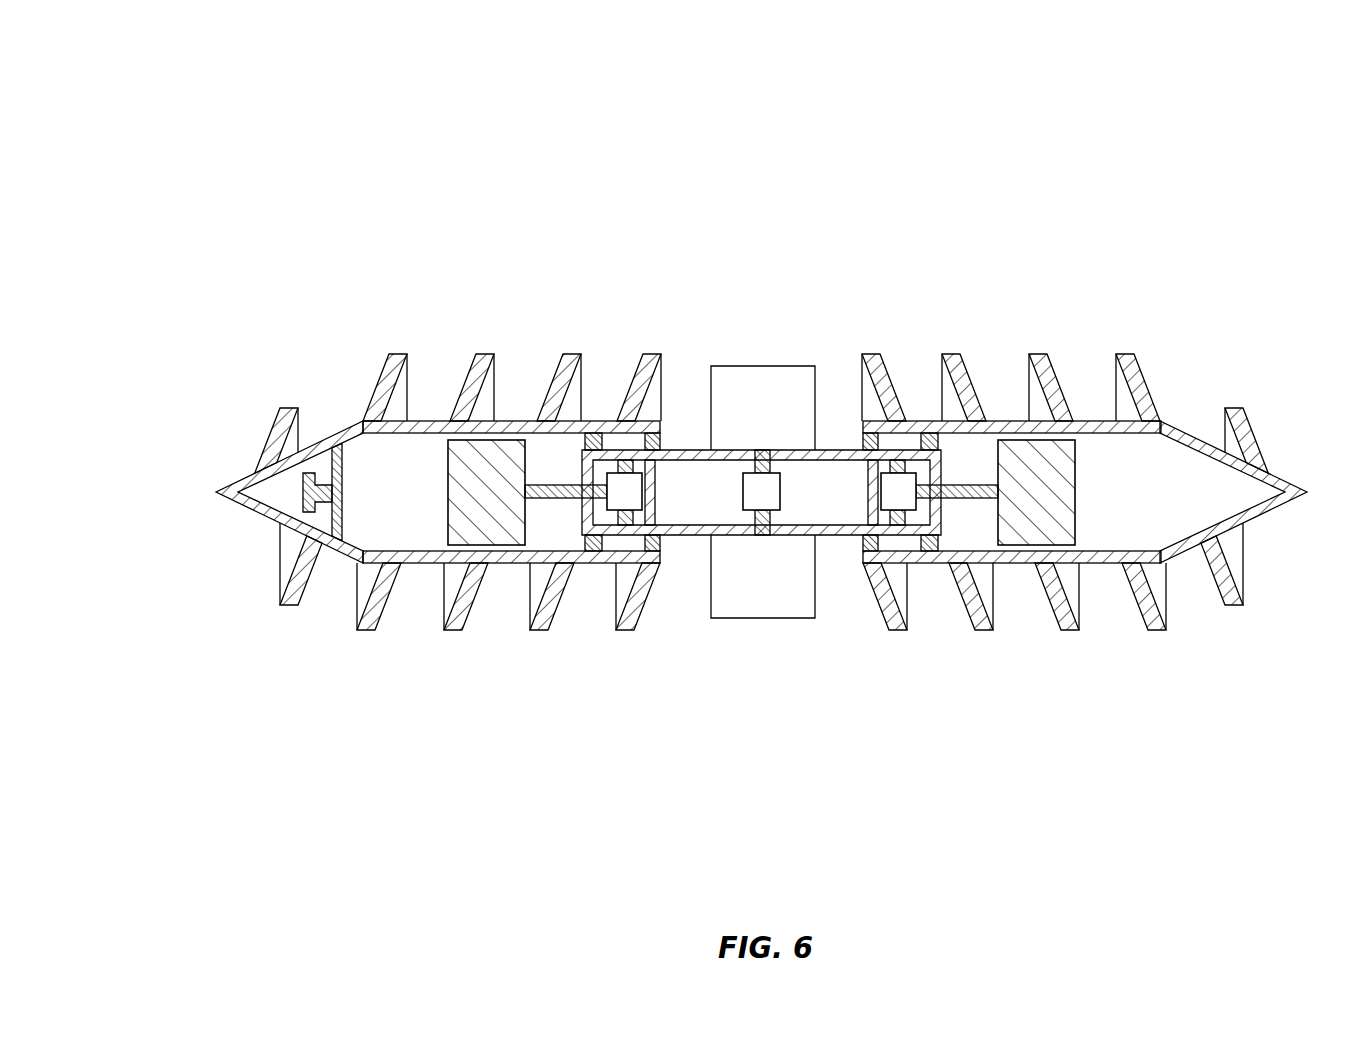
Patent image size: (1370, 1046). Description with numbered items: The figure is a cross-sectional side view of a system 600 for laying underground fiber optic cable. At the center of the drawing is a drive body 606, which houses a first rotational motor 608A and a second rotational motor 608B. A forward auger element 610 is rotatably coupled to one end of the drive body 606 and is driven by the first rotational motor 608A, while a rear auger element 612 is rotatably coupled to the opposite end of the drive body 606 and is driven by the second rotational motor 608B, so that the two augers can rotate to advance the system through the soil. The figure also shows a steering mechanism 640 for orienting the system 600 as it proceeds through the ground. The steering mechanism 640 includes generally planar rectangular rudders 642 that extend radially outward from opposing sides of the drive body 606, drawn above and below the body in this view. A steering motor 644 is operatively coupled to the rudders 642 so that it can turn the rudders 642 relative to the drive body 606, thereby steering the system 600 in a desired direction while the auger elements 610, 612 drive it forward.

The system 600 is at (203, 118).
The drive body 606 is at (675, 313).
The first rotational motor 608A is at (885, 512).
The second rotational motor 608B is at (638, 512).
The forward auger element 610 is at (1070, 342).
The rear auger element 612 is at (343, 353).
The steering mechanism 640 is at (775, 655).
The rudders 642 is at (750, 365).
The steering motor 644 is at (772, 470).